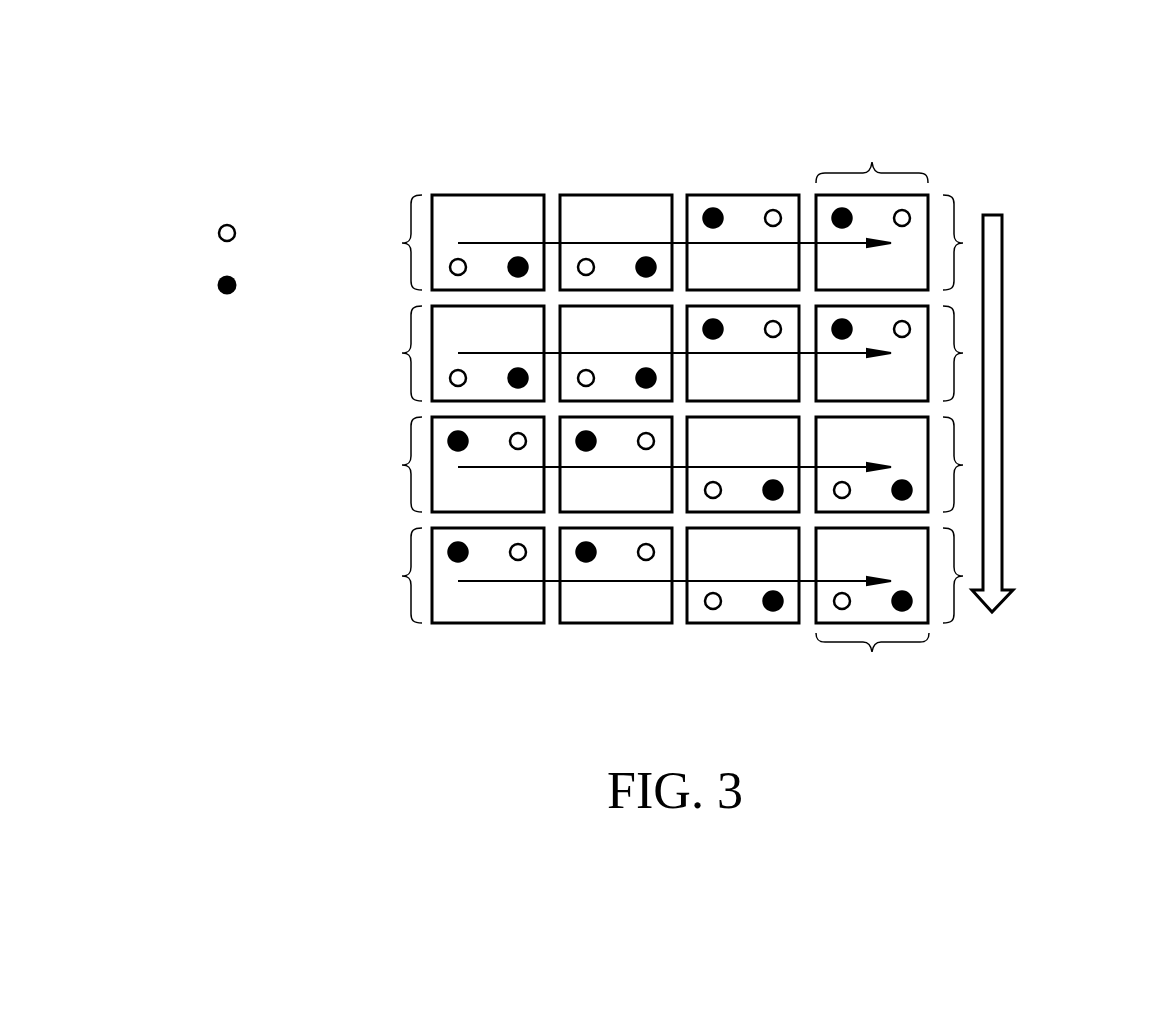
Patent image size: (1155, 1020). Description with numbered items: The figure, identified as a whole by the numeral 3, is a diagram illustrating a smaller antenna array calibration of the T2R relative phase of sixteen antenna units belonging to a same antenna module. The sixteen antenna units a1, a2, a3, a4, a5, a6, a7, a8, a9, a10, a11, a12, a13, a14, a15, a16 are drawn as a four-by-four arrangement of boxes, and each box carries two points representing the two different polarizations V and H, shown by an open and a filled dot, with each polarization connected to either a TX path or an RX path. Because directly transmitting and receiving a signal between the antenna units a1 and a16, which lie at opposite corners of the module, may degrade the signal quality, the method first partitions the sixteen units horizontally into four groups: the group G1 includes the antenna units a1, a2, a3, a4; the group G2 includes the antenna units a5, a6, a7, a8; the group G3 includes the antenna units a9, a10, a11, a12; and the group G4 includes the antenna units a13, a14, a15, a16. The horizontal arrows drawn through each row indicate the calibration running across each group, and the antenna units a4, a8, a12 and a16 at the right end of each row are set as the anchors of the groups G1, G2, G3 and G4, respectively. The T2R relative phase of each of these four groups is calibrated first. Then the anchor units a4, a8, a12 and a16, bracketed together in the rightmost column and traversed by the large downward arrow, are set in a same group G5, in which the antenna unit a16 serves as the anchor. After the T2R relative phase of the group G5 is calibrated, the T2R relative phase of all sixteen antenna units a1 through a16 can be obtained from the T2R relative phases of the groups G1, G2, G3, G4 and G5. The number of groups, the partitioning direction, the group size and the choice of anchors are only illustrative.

The pixel arrangement of image sensor 3 is at (687, 354).
The group G1 is at (658, 242).
The group G2 is at (658, 353).
The group G3 is at (658, 464).
The group G4 is at (658, 575).
The group G5 is at (872, 387).
The antenna unit a1 is at (488, 242).
The antenna unit a2 is at (616, 242).
The antenna unit a3 is at (743, 242).
The antenna unit a4 is at (872, 242).
The antenna unit a5 is at (488, 353).
The antenna unit a6 is at (616, 353).
The antenna unit a7 is at (743, 353).
The antenna unit a8 is at (872, 353).
The antenna unit a9 is at (488, 464).
The antenna unit a10 is at (616, 464).
The antenna unit a11 is at (743, 464).
The antenna unit a12 is at (872, 464).
The antenna unit a13 is at (488, 575).
The antenna unit a14 is at (616, 575).
The antenna unit a15 is at (743, 575).
The antenna unit a16 is at (872, 575).